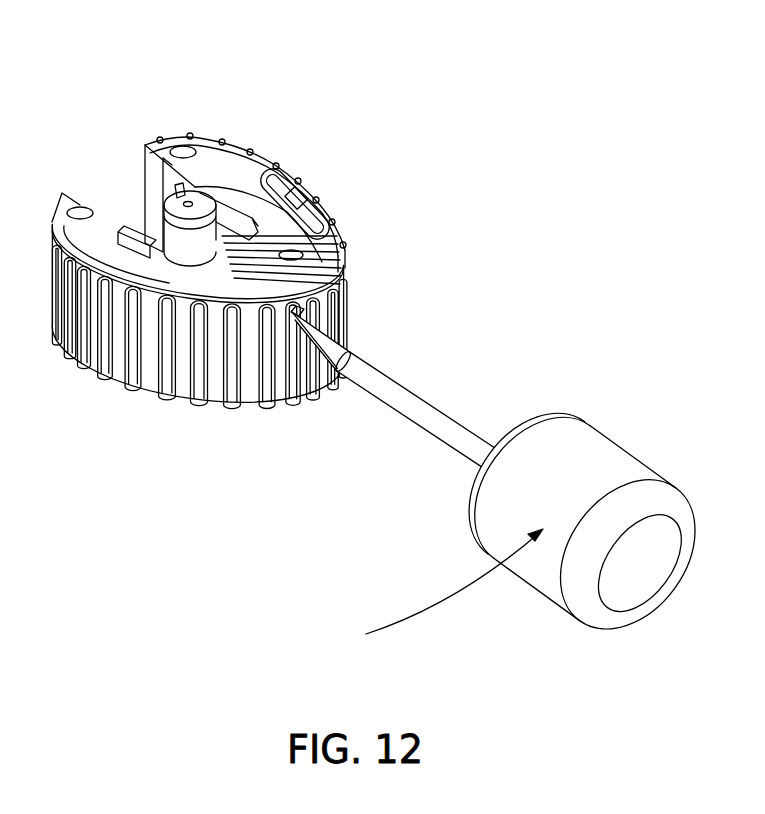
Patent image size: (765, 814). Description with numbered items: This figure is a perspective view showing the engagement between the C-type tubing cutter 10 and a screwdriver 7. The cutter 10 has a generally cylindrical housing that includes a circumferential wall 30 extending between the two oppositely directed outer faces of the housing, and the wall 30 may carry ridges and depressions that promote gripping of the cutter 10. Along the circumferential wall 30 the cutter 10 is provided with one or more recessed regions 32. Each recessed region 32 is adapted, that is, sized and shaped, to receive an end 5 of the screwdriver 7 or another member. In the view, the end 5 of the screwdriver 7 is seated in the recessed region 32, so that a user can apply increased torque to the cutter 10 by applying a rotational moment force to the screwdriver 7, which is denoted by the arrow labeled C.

The C-type tubing cutter 10 is at (645, 112).
The circumferential wall 30 is at (117, 345).
The recessed region 32 is at (293, 302).
The end of a screwdriver 5 is at (296, 333).
The screwdriver 7 is at (584, 455).